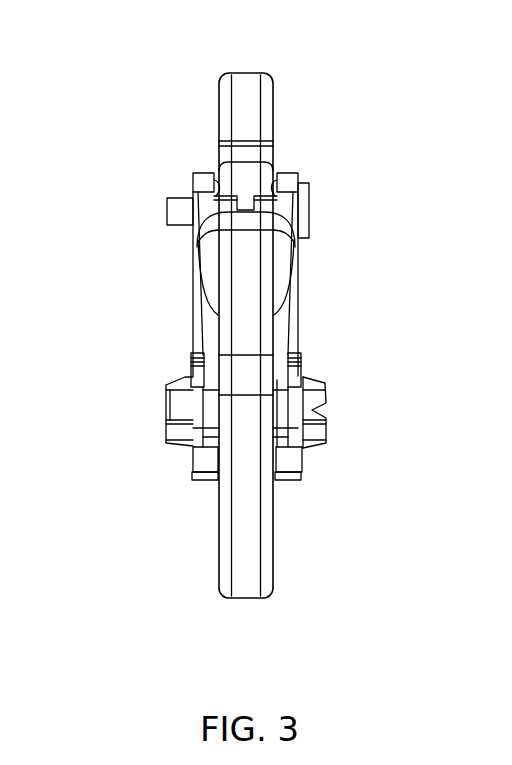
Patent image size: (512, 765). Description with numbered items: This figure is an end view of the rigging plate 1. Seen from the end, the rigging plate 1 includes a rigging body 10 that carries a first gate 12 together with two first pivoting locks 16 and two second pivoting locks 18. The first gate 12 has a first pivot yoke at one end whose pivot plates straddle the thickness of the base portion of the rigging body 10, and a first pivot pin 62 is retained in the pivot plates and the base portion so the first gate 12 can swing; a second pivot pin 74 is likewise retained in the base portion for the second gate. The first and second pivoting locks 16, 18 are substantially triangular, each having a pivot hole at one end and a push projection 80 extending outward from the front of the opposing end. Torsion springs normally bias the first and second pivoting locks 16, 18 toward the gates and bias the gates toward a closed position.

The rigging plate 1 is at (400, 118).
The rigging body 10 is at (286, 553).
The first gate 12 is at (283, 280).
The first pivoting locks 16 is at (250, 352).
The second pivoting locks 18 is at (196, 457).
The first pivot pin 62 is at (326, 205).
The second pivot pin 74 is at (310, 212).
The push projection 80 is at (166, 443).